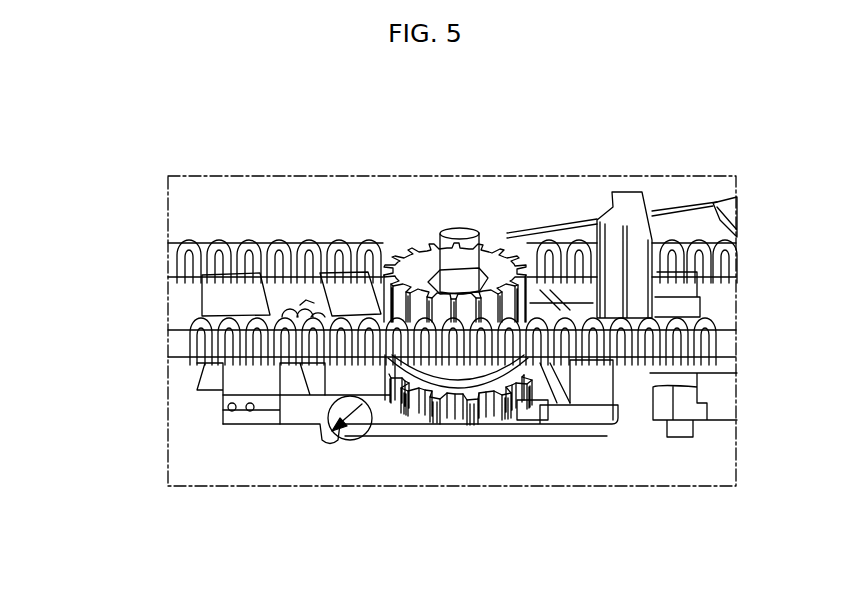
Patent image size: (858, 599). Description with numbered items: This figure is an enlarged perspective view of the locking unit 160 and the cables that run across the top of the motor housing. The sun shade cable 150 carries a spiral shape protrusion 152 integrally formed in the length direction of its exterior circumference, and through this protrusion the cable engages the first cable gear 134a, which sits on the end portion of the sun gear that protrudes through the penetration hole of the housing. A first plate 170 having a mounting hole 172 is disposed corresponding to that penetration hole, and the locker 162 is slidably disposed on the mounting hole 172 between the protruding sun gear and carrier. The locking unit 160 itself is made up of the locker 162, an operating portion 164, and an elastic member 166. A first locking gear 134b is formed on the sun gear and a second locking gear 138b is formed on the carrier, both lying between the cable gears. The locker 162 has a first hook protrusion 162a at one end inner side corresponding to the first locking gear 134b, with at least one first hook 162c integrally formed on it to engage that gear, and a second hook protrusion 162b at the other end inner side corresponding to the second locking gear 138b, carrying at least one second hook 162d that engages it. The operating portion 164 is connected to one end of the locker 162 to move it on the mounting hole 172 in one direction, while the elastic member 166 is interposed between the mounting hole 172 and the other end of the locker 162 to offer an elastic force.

The sun shade cable 150 is at (197, 340).
The spiral shape protrusion 152 is at (258, 247).
The elastic member 166 is at (293, 312).
The first hook protrusion 162a is at (347, 290).
The first cable gear 134a is at (420, 263).
The first hook 162c is at (550, 313).
The second hook protrusion 162b is at (620, 375).
The second hook 162d is at (588, 388).
The locking unit 160 is at (277, 440).
The locker 162 is at (632, 424).
The mounting hole 172 is at (362, 403).
The first locking gear 134b is at (463, 372).
The second locking gear 138b is at (437, 428).
The operating portion 164 is at (732, 385).
The first plate 170 is at (220, 463).